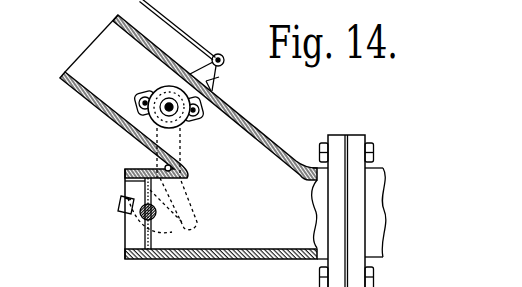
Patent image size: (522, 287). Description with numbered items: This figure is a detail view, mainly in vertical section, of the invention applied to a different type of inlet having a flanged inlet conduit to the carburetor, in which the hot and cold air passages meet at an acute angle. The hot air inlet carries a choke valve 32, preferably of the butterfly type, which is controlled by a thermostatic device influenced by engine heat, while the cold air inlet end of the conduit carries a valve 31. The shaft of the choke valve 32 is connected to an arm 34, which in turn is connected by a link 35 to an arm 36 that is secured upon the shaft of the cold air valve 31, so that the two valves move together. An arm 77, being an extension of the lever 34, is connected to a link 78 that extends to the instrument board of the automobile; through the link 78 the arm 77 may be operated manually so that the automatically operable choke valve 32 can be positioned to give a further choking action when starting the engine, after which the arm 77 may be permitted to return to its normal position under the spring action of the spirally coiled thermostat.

The valve 31 is at (145, 186).
The choke valve 32 is at (158, 90).
The arm 34 is at (183, 142).
The link 35 is at (192, 194).
The arm 36 is at (158, 258).
The arm 77 is at (218, 71).
The link 78 is at (203, 49).